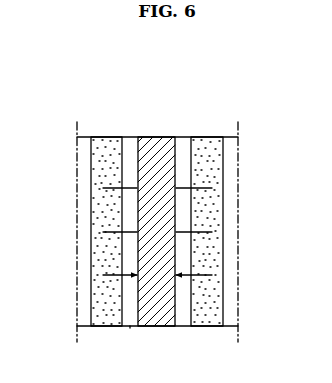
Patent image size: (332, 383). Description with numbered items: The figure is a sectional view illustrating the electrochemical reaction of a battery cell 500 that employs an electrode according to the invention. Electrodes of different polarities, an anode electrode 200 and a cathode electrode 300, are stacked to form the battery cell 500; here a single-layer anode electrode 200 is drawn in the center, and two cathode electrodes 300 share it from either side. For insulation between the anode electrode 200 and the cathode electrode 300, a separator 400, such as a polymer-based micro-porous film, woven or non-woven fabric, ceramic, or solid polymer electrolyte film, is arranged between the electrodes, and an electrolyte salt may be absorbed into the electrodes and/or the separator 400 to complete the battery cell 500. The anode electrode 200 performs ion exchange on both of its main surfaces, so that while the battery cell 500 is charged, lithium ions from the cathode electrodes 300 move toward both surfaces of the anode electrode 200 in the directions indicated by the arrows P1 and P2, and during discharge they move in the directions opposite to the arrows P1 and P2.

The anode electrode 200 is at (155, 137).
The cathode electrode 300 is at (105, 320).
The separator 400 is at (130, 326).
The battery cell 500 is at (234, 97).
The arrow P1 is at (103, 232).
The arrow P2 is at (212, 232).